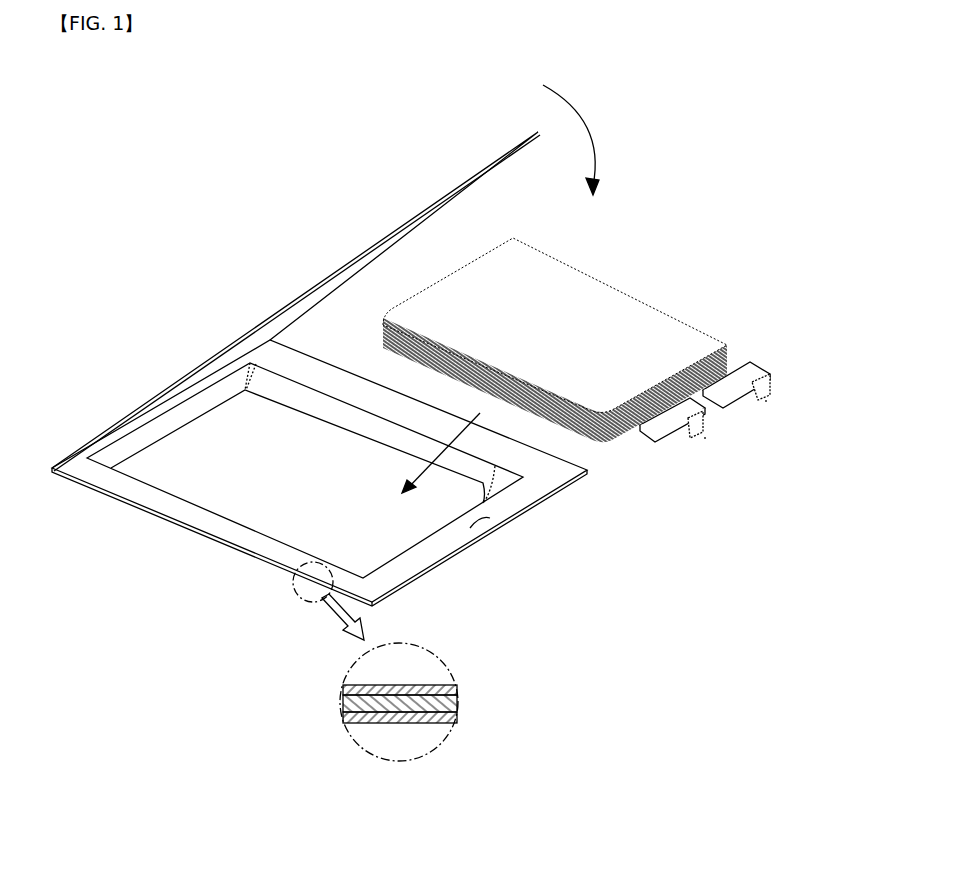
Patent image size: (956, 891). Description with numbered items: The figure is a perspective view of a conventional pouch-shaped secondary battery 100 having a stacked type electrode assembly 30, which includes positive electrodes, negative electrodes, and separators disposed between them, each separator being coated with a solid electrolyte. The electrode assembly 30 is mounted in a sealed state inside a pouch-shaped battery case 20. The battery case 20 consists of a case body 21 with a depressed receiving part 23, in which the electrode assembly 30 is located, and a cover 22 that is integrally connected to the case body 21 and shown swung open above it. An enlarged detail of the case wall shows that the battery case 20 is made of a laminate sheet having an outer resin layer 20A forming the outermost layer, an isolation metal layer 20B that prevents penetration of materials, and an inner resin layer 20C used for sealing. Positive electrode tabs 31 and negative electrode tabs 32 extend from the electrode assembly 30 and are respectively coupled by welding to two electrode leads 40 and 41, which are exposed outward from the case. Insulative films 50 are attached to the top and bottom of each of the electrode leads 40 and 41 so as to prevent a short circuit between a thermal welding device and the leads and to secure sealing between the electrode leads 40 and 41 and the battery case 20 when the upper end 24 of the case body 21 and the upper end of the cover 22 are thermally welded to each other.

The battery pack 100 is at (99, 131).
The pouch-shaped battery case 20 is at (151, 341).
The case body 21 is at (238, 548).
The cover 22 is at (345, 245).
The depressed receiving part 23 is at (194, 486).
The upper end of the case body 24 is at (490, 518).
The electrode assembly 30 is at (632, 308).
The positive electrode tabs 31 is at (727, 348).
The negative electrode tabs 32 is at (640, 414).
The electrode lead 40 is at (770, 382).
The electrode lead 41 is at (712, 428).
The insulative films 50 is at (705, 437).
The outer resin layer 20A is at (452, 718).
The isolation metal layer 20B is at (458, 703).
The inner resin layer 20C is at (450, 687).